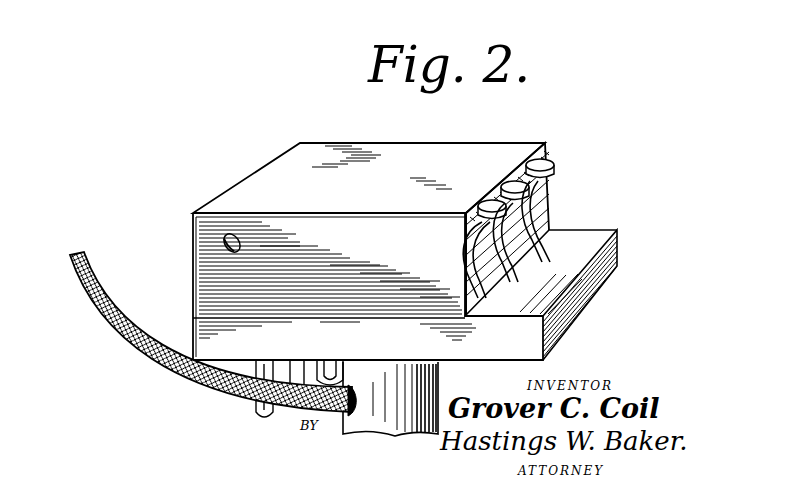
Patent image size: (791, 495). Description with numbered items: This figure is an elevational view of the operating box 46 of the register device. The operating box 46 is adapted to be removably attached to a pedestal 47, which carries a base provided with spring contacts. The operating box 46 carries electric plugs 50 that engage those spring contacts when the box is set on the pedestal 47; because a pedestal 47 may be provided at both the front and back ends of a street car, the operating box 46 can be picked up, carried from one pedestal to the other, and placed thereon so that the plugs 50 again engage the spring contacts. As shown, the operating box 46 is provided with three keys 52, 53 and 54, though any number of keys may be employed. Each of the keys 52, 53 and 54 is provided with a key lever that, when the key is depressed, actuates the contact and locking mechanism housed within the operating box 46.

The operating box 46 is at (323, 145).
The pedestal 47 is at (394, 426).
The electric plugs 50 is at (321, 361).
The key 52 is at (494, 199).
The key 53 is at (507, 180).
The key 54 is at (553, 162).